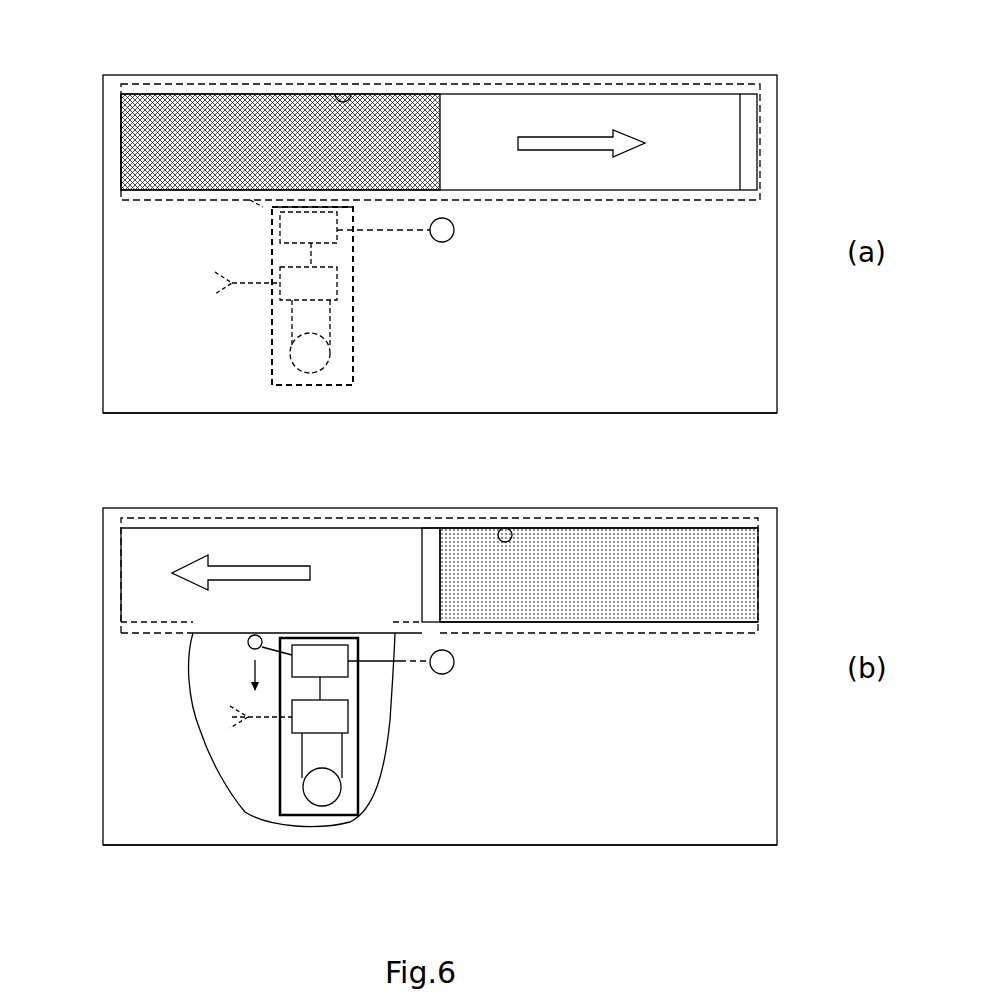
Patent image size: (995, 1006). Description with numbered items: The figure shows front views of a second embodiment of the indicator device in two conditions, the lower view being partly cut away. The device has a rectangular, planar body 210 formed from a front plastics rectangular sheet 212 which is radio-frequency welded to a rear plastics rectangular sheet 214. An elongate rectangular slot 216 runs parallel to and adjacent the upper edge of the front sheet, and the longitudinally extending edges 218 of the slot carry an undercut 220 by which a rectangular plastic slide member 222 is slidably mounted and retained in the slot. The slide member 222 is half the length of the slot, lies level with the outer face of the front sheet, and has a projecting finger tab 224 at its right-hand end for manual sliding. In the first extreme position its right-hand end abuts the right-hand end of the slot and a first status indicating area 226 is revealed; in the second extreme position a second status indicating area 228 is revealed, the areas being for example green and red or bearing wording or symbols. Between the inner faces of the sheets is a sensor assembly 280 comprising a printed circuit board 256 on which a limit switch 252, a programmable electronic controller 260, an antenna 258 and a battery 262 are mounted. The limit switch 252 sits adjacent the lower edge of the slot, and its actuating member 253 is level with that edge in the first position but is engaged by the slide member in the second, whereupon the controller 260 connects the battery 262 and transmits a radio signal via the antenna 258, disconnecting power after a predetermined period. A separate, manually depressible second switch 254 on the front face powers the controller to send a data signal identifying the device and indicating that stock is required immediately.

The body 210 is at (777, 320).
The front plastics rectangular sheet 212 is at (750, 373).
The rear plastics rectangular sheet 214 is at (232, 770).
The elongate rectangular slot 216 is at (352, 96).
The longitudinally extending edges 218 is at (207, 97).
The undercut 220 is at (138, 85).
The slide member 222 is at (641, 107).
The finger tab 224 is at (748, 142).
The first status indicating area 226 is at (295, 122).
The second status indicating area 228 is at (612, 546).
The limit switch 252 is at (314, 456).
The actuating member 253 is at (263, 190).
The second switch 254 is at (453, 233).
The printed circuit board 256 is at (355, 290).
The antenna 258 is at (245, 292).
The programmable electronic controller 260 is at (314, 522).
The battery 262 is at (355, 355).
The sensor assembly 280 is at (368, 268).